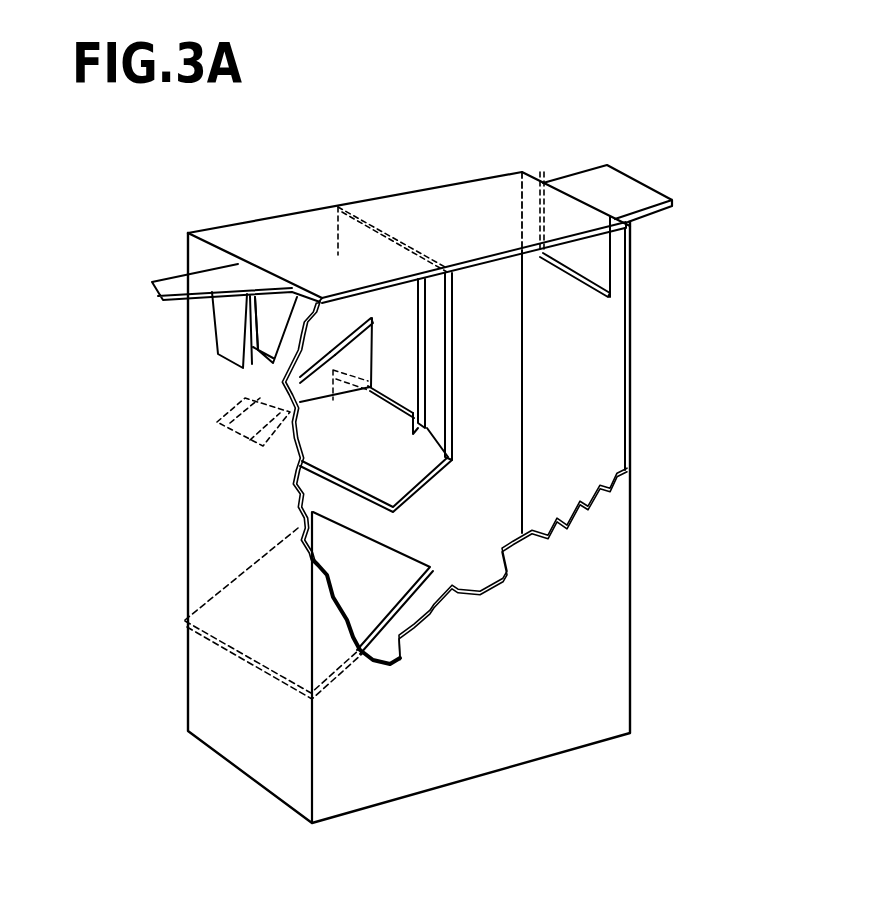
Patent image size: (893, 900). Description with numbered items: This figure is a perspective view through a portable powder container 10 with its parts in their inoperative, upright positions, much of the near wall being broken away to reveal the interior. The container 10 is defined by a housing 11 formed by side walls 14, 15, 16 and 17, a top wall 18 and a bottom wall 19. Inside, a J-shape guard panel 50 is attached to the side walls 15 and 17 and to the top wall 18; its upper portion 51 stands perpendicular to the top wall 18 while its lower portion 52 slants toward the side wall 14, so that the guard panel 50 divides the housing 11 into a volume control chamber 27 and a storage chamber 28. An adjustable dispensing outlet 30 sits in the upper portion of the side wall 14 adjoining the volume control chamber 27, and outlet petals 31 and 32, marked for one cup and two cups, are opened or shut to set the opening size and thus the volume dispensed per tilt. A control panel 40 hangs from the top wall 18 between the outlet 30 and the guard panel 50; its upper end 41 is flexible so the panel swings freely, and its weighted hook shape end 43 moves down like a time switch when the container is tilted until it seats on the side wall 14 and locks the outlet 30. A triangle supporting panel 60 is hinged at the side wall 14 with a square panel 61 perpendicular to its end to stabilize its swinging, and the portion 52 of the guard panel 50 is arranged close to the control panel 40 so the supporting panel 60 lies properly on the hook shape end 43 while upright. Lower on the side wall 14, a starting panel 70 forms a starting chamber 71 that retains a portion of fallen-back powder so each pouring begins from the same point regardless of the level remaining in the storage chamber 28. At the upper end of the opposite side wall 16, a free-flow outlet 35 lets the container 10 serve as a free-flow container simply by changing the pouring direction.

The portable powder container 10 is at (650, 638).
The housing 11 is at (637, 510).
The side wall 14 is at (230, 707).
The side wall 15 is at (598, 700).
The side wall 16 is at (598, 450).
The side wall 17 is at (220, 224).
The top wall 18 is at (482, 200).
The bottom wall 19 is at (502, 770).
The volume control chamber 27 is at (330, 313).
The storage chamber 28 is at (472, 572).
The adjustable dispensing outlet 30 is at (270, 317).
The outlet petal 31 is at (152, 281).
The outlet petal 32 is at (212, 332).
The free-flow outlet 35 is at (593, 263).
The control panel 40 is at (388, 315).
The upper end 41 is at (387, 313).
The hook shape end 43 is at (420, 423).
The guard panel 50 is at (455, 353).
The upper portion 51 is at (433, 318).
The lower portion 52 is at (350, 457).
The triangle supporting panel 60 is at (280, 385).
The square panel 61 is at (217, 421).
The starting panel 70 is at (252, 594).
The starting chamber 71 is at (235, 523).